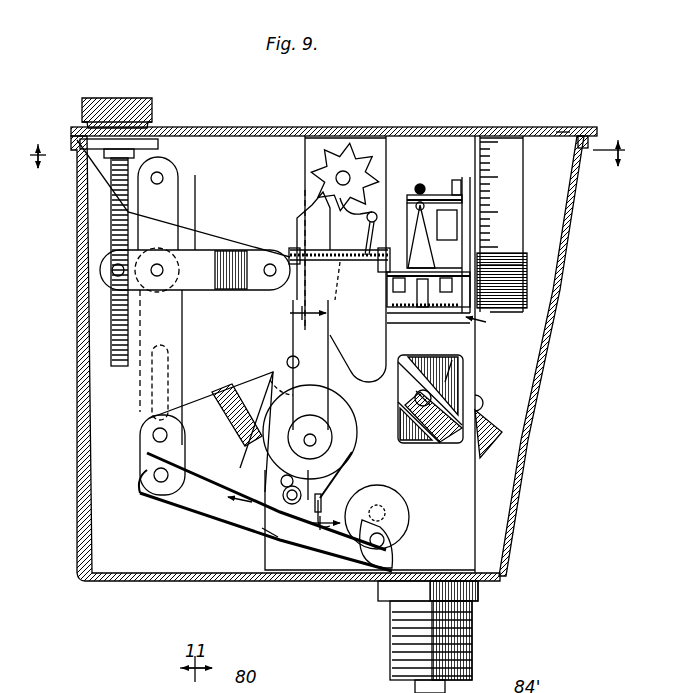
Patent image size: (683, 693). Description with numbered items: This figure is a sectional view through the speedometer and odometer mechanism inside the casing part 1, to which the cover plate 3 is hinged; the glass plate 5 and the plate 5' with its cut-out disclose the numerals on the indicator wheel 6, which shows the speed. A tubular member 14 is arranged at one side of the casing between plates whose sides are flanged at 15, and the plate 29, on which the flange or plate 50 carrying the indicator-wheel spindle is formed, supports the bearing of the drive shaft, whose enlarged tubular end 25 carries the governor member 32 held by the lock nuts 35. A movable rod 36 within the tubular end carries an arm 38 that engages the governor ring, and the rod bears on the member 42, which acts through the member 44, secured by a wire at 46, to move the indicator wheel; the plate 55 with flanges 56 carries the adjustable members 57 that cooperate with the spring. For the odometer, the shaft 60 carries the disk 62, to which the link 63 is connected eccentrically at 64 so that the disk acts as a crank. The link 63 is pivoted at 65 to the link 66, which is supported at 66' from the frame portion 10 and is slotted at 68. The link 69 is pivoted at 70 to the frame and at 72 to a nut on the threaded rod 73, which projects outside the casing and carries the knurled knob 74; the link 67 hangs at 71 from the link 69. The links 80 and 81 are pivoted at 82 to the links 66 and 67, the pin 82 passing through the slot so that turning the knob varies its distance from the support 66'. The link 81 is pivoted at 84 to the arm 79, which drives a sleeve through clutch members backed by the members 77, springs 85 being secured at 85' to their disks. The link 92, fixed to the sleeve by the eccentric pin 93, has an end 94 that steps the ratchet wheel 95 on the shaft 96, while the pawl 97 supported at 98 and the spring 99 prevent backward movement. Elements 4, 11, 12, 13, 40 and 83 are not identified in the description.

The casing part 1 is at (544, 366).
The cover plate 3 is at (326, 154).
The cover plate 4 is at (560, 128).
The glass plate 5 is at (500, 119).
The plate 5' is at (502, 206).
The indicator wheel 6 is at (525, 287).
The frame portion 10 is at (307, 417).
The partition wall 11 is at (476, 481).
The frame plate 12 is at (376, 146).
The base plate 13 is at (445, 572).
The tubular member 14 is at (473, 626).
The flanges 15 is at (197, 189).
The enlarged end of shaft 25 is at (420, 357).
The plate 29 is at (447, 324).
The governor member 32 is at (502, 429).
The lock nuts 35 is at (431, 398).
The movable rod 36 is at (425, 296).
The arm 38 is at (496, 405).
The pin 40 is at (452, 360).
The member 42 is at (482, 269).
The member 44 is at (508, 264).
The wire attachment point 46 is at (470, 226).
The flange 50 is at (467, 180).
The plate 55 is at (452, 202).
The flanges 56 is at (452, 184).
The adjustable members 57 is at (416, 187).
The shaft 60 is at (388, 494).
The disk 62 is at (395, 526).
The link 63 is at (280, 537).
The connection 64 is at (386, 542).
The pivotal connection 65 is at (154, 475).
The link 66 is at (117, 203).
The pivotal support 66' is at (173, 144).
The link 67 is at (147, 389).
The slot 68 is at (150, 406).
The link 69 is at (209, 259).
The pivot 70 is at (270, 264).
The pivot 71 is at (163, 270).
The pivot 72 is at (112, 270).
The threaded rod 73 is at (111, 340).
The knurled knob 74 is at (141, 98).
The members 77 is at (353, 452).
The arm 79 is at (325, 514).
The link 80 is at (226, 391).
The link 81 is at (222, 493).
The pin 82 is at (153, 435).
The pin 83 is at (288, 362).
The pivot 84 is at (264, 530).
The springs 85 is at (327, 483).
The spring attachment 85' is at (291, 478).
The link 92 is at (270, 415).
The pin 93 is at (317, 438).
The end of link 94 is at (310, 209).
The ratchet wheel 95 is at (357, 158).
The shaft 96 is at (341, 172).
The pawl 97 is at (368, 226).
The pawl support 98 is at (337, 261).
The spring 99 is at (339, 264).